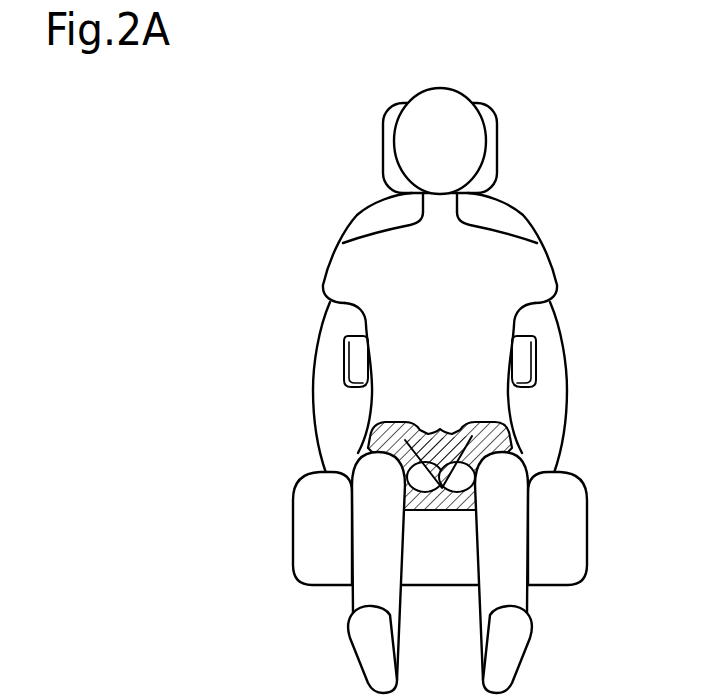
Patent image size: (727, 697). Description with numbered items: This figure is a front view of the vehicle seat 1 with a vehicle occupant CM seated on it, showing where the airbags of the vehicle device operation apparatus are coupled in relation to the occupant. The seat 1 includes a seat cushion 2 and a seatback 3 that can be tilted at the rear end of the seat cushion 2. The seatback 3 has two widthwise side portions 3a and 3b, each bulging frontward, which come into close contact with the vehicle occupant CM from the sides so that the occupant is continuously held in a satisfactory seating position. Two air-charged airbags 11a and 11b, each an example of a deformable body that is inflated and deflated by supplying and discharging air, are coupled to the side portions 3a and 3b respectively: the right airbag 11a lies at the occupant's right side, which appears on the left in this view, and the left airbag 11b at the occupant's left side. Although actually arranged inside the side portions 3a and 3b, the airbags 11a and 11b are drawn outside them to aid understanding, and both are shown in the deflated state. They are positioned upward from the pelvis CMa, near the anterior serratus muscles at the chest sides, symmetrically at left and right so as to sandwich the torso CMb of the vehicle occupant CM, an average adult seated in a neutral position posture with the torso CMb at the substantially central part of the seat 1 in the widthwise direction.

The vehicle seat 1 is at (443, 330).
The seat cushion 2 is at (590, 532).
The seatback 3 is at (443, 333).
The side portion 3a is at (310, 387).
The side portion 3b is at (573, 387).
The right airbag 11a is at (343, 347).
The left airbag 11b is at (540, 349).
The vehicle occupant CM is at (491, 363).
The pelvis CMa is at (495, 443).
The torso CMb is at (487, 402).